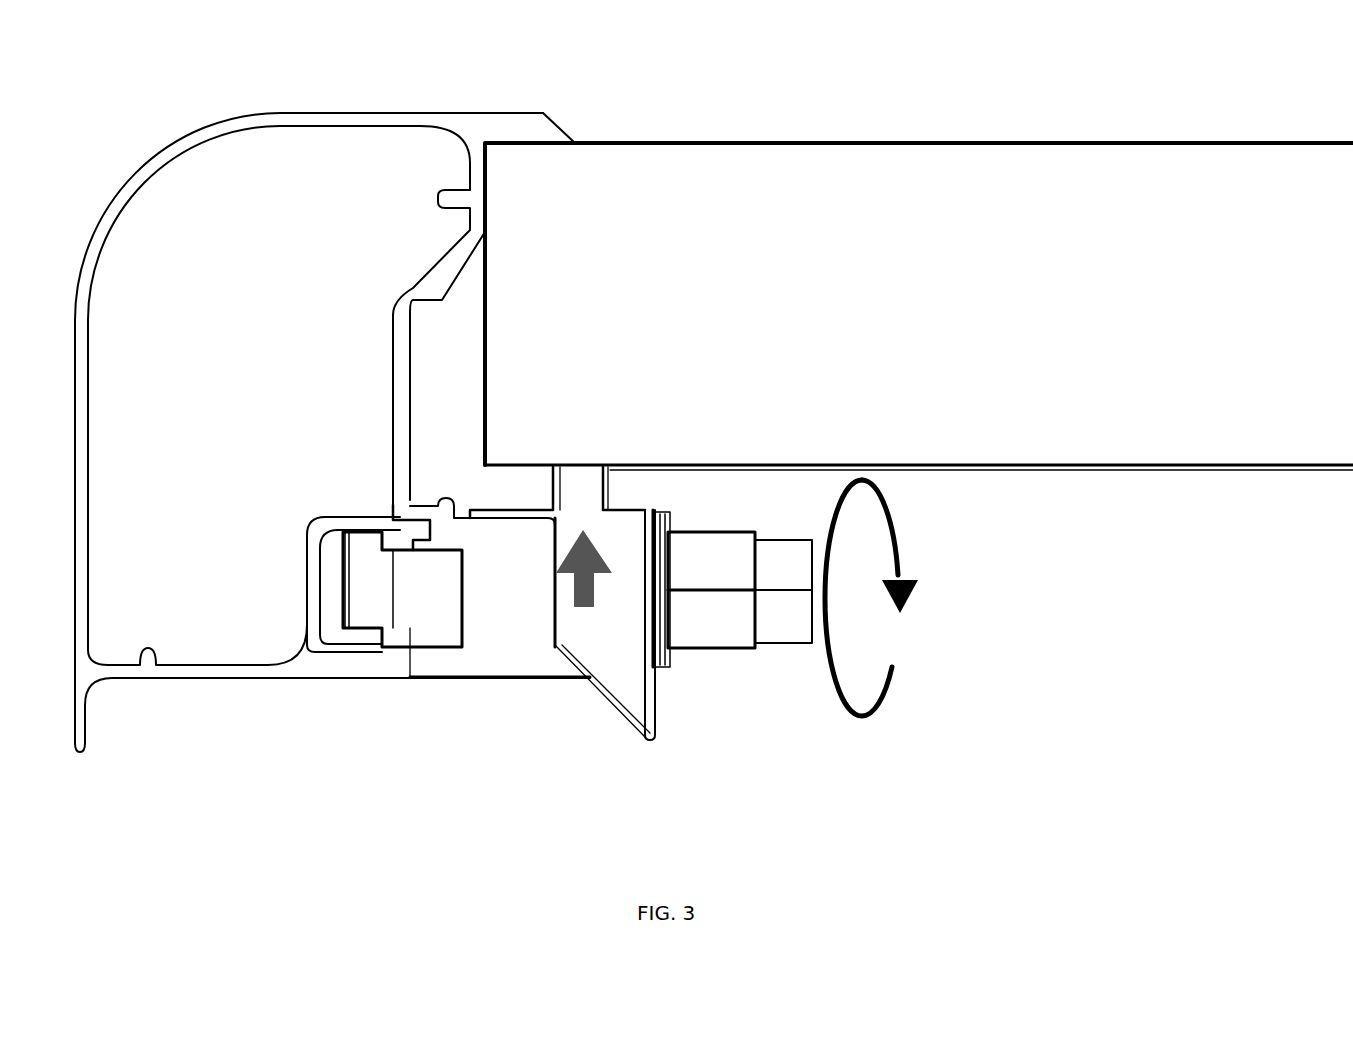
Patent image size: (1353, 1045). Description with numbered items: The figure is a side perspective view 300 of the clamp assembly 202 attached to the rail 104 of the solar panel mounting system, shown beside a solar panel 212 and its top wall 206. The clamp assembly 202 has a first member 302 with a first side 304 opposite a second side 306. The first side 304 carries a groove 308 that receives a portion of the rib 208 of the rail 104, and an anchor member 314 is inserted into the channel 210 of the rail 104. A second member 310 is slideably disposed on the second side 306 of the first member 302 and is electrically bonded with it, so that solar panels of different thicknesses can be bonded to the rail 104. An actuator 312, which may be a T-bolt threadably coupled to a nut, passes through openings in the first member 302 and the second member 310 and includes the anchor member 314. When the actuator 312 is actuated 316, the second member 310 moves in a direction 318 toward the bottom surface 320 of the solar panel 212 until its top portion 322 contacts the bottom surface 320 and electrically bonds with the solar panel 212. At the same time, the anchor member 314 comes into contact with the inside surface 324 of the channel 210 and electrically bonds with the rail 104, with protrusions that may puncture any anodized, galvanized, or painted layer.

The rail 104 is at (112, 205).
The housing top wall 206 is at (543, 113).
The solar panel 212 is at (918, 127).
The rib 208 is at (430, 533).
The groove 308 is at (404, 520).
The first side 304 is at (455, 578).
The anchor member 314 is at (343, 577).
The channel 210 is at (338, 587).
The inside surface 324 is at (385, 635).
The second side 306 is at (551, 612).
The top portion 322 is at (555, 466).
The bottom surface 320 is at (630, 466).
The actuator 312 is at (724, 532).
The actuation 316 is at (890, 680).
The direction 318 is at (583, 607).
The first member 302 is at (588, 677).
The second member 310 is at (658, 735).
The clamp assembly 202 is at (815, 645).
The side perspective view 300 is at (20, 805).